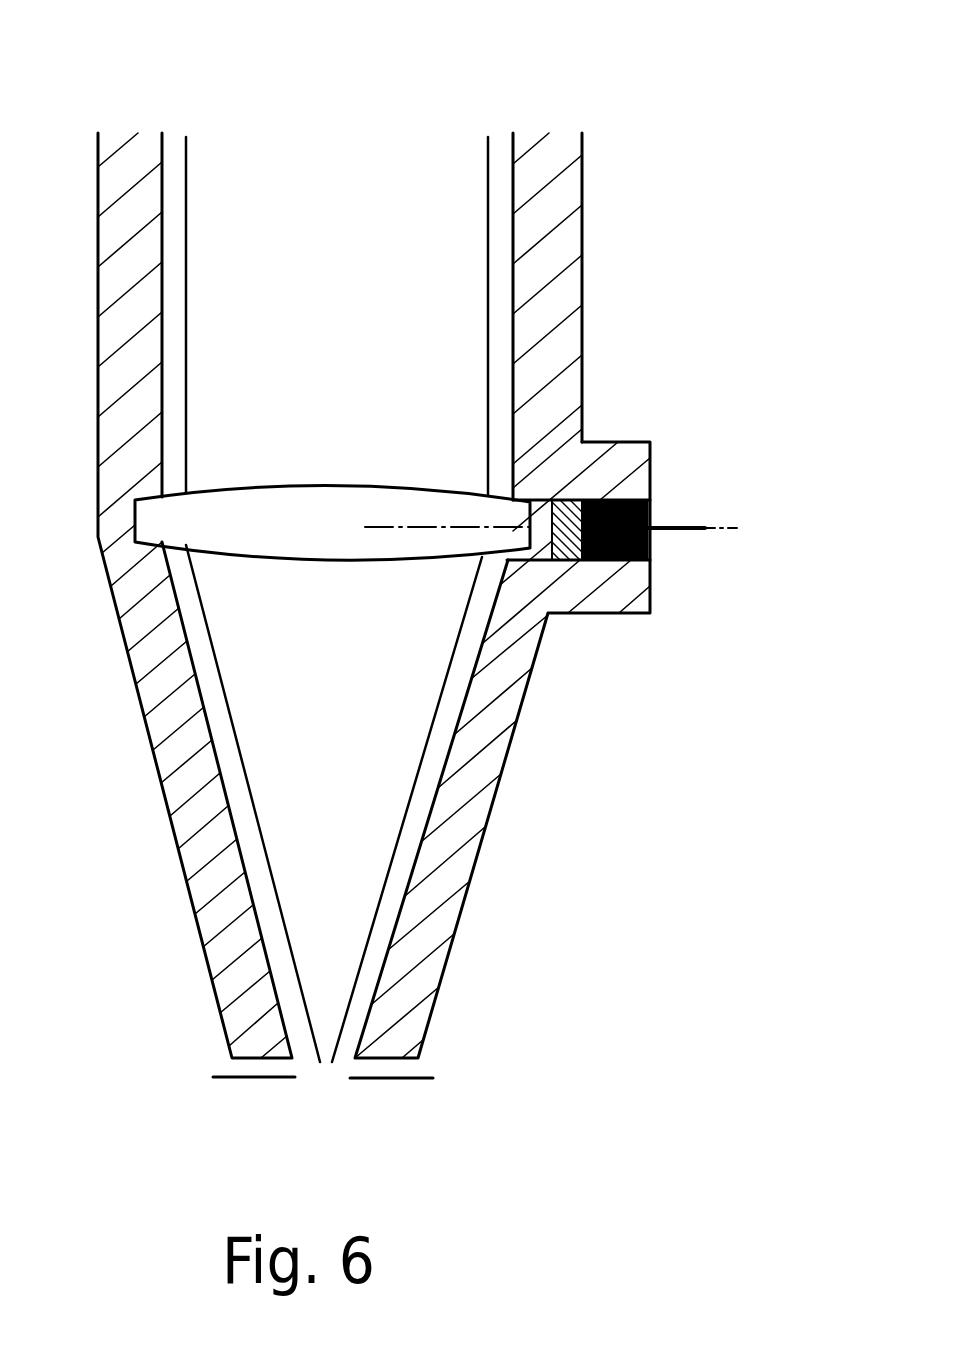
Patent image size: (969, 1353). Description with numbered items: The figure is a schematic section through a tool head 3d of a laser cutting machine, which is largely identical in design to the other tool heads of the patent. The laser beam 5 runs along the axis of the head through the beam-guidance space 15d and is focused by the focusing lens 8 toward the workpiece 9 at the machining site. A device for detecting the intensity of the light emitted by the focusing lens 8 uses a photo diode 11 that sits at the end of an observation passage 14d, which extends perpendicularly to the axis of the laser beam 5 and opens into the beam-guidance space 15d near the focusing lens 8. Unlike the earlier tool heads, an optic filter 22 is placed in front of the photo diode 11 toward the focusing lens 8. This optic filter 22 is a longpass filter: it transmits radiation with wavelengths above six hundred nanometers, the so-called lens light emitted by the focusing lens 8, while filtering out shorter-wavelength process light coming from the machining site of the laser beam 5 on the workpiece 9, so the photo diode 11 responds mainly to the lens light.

The tool head 3d is at (612, 171).
The laser beam 5 is at (242, 210).
The focusing lens 8 is at (237, 518).
The workpiece 9 is at (433, 1078).
The photo diode 11 is at (650, 565).
The observation passage 14d is at (620, 441).
The beam-guidance space 15d is at (497, 289).
The optic filter 22 is at (568, 560).